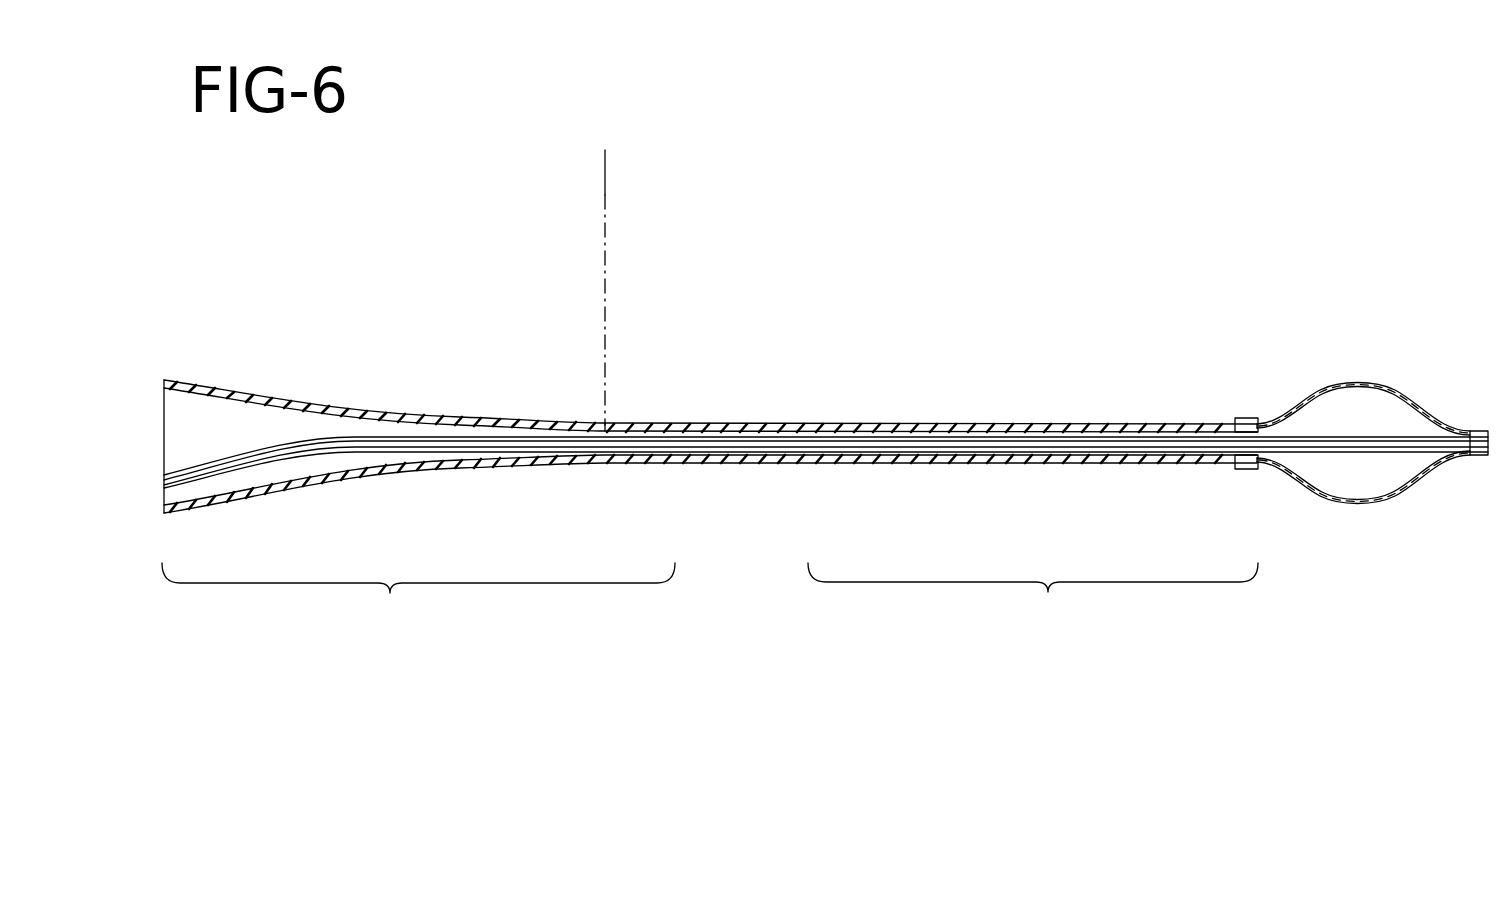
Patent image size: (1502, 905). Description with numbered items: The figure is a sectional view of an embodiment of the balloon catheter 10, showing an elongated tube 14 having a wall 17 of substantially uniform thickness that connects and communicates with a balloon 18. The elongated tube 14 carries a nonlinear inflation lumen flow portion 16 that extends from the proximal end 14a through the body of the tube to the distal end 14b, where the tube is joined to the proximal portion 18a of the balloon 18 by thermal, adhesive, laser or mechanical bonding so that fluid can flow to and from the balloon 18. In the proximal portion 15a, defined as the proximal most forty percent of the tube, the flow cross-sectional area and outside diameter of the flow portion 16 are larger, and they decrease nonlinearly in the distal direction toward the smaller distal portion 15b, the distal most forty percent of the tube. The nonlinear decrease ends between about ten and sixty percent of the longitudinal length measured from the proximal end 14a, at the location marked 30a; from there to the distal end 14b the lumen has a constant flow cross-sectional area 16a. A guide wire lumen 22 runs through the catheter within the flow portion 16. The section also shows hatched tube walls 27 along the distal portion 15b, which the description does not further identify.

The balloon catheter 10 is at (864, 330).
The elongated tube 14 is at (490, 420).
The proximal end 14a is at (164, 366).
The distal end 14b is at (1270, 420).
The proximal portion 15a is at (418, 595).
The distal portion 15b is at (1033, 594).
The inflation lumen flow portion 16 is at (245, 430).
The constant flow cross-sectional area 16a is at (785, 428).
The wall 17 is at (693, 425).
The balloon 18 is at (1380, 380).
The proximal portion of balloon 18a is at (1247, 468).
The guide wire lumen 22 is at (337, 452).
The reinforcing braid 27 is at (943, 425).
The reference location 30a is at (605, 182).